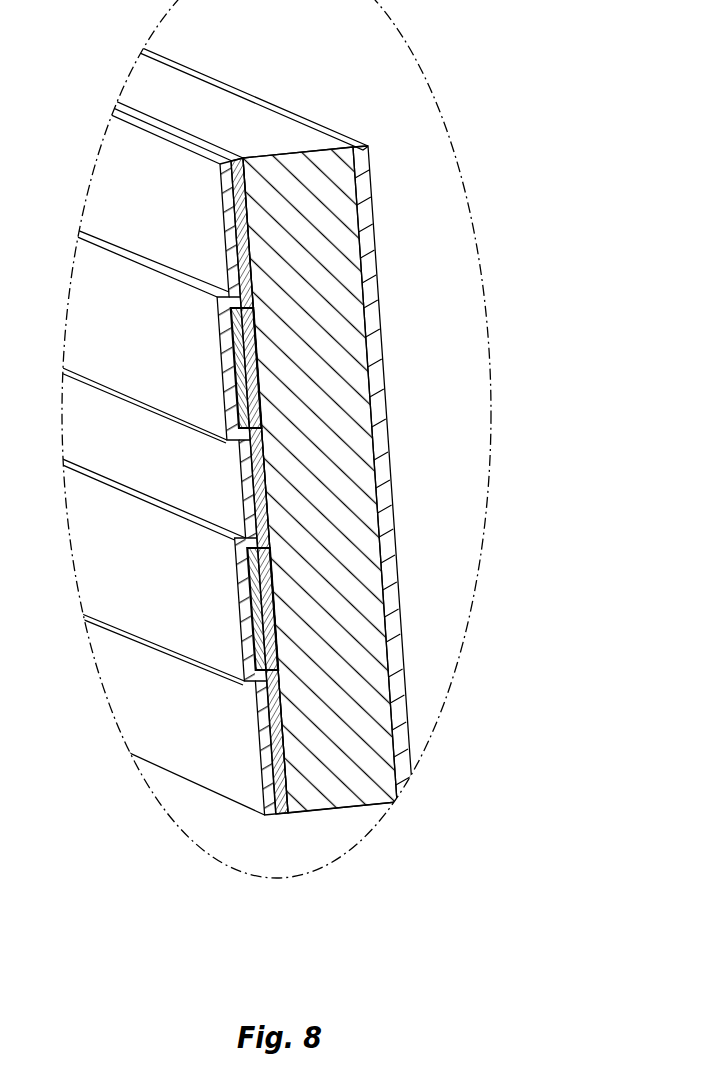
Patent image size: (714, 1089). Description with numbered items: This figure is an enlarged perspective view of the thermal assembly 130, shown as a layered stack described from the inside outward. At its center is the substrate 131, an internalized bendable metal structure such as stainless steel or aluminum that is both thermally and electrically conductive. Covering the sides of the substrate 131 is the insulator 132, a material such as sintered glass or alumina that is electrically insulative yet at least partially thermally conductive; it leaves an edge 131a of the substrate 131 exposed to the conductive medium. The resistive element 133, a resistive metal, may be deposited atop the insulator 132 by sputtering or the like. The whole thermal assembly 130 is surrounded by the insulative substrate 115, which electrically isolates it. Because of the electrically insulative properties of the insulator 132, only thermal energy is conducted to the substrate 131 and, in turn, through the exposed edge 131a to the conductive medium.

The thermal assembly 130 is at (467, 240).
The substrate 131 is at (333, 193).
The edge 131a is at (253, 118).
The insulative substrate 115 is at (375, 329).
The insulator 132 is at (256, 428).
The resistive element 133 is at (262, 635).